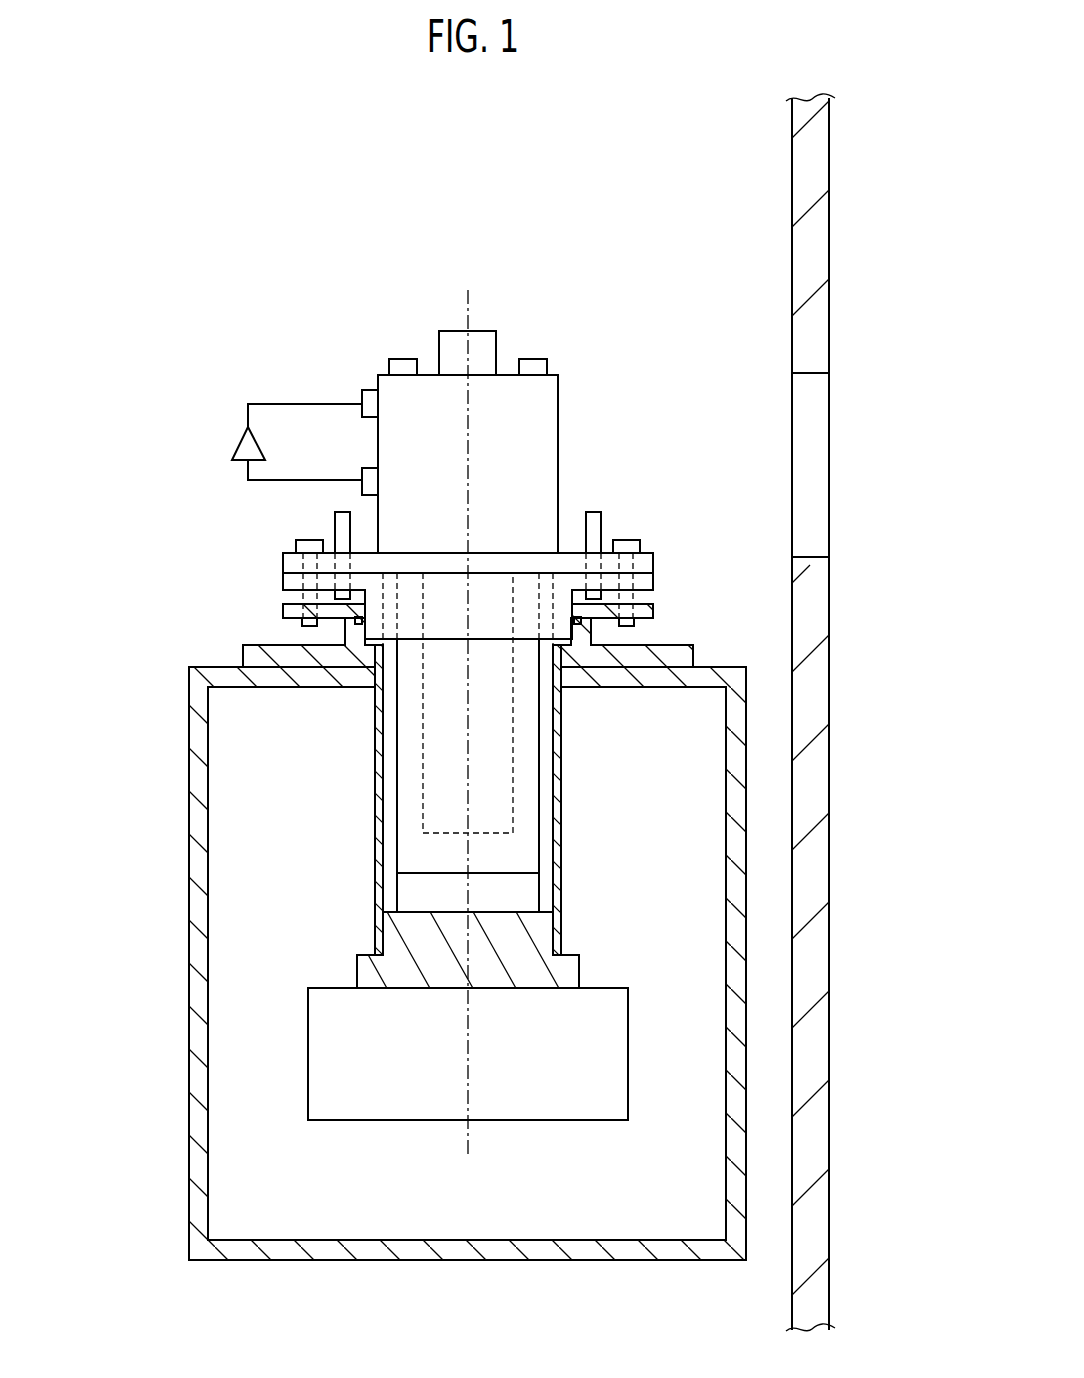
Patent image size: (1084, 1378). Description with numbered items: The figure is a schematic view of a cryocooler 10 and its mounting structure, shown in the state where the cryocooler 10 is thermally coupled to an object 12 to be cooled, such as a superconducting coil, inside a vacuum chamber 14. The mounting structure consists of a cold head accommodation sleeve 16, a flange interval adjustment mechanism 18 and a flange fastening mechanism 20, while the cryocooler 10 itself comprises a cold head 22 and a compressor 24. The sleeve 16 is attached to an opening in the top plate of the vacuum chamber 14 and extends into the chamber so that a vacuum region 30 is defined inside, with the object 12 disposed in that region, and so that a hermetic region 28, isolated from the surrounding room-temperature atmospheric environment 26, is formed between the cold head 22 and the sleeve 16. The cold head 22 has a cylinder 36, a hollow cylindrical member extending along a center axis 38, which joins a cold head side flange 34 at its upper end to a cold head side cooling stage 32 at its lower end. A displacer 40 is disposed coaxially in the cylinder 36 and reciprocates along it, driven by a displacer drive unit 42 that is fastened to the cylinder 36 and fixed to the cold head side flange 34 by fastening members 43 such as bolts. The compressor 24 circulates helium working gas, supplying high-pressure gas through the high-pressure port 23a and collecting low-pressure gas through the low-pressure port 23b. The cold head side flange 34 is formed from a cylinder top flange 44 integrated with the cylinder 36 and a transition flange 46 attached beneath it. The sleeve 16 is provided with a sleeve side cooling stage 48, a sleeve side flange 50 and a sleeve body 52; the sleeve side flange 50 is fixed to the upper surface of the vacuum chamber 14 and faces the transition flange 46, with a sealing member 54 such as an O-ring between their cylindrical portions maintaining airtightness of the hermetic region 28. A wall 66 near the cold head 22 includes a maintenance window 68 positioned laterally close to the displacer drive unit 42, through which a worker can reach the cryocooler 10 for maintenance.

The cryocooler 10 is at (147, 248).
The object to be cooled 12 is at (585, 1122).
The vacuum chamber 14 is at (200, 827).
The cold head accommodation sleeve 16 is at (368, 877).
The flange interval adjustment mechanism 18 is at (592, 505).
The flange fastening mechanism 20 is at (632, 527).
The cold head 22 is at (362, 350).
The high-pressure port 23a is at (372, 385).
The low-pressure port 23b is at (372, 462).
The compressor 24 is at (233, 442).
The surrounding environment 26 is at (711, 272).
The hermetic region 28 is at (387, 815).
The vacuum region 30 is at (238, 750).
The cold head side cooling stage 32 is at (507, 890).
The cold head side flange 34 is at (202, 498).
The cylinder 36 is at (538, 815).
The center axis 38 is at (468, 311).
The displacer 40 is at (522, 773).
The displacer drive unit 42 is at (558, 411).
The fastening members 43 is at (532, 358).
The cylinder top flange 44 is at (293, 580).
The transition flange 46 is at (374, 596).
The sleeve side cooling stage 48 is at (400, 928).
The sleeve side flange 50 is at (357, 633).
The sleeve body 52 is at (562, 723).
The sealing member 54 is at (358, 625).
The wall 66 is at (820, 310).
The maintenance window 68 is at (820, 410).